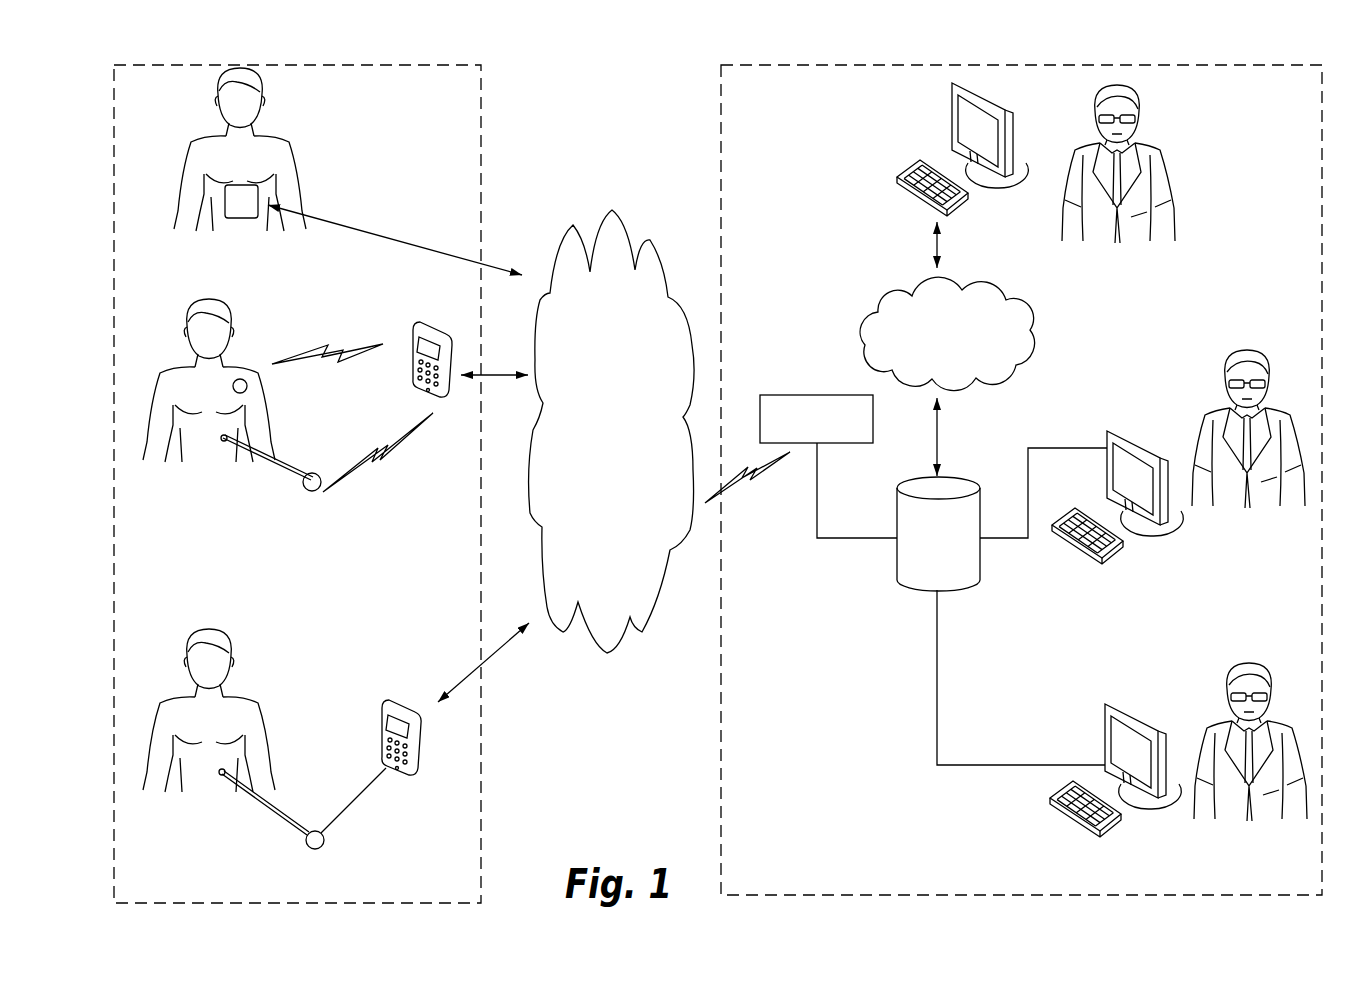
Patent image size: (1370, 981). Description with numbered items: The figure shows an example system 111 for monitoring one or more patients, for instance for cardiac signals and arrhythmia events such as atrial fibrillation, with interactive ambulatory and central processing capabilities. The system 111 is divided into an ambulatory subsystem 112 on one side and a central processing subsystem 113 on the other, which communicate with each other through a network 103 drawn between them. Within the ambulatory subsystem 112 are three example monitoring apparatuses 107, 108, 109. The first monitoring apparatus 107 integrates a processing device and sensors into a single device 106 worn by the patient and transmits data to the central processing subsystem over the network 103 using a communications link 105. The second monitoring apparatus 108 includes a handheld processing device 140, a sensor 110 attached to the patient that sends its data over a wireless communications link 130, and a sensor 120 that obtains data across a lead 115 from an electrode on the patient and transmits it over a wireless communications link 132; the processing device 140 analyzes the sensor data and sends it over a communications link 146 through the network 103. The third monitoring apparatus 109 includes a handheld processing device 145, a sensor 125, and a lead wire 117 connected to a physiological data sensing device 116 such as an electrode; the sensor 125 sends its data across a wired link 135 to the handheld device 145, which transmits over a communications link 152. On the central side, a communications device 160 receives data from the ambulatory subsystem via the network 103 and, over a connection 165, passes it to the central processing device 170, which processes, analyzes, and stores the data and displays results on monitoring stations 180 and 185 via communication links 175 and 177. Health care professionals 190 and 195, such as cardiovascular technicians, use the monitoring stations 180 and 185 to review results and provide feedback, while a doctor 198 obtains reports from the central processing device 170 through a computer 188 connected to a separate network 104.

The system 111 is at (496, 48).
The ambulatory subsystem 112 is at (490, 897).
The central processing subsystem 113 is at (1272, 897).
The network 103 is at (612, 431).
The network 104 is at (947, 333).
The communications link 105 is at (422, 248).
The single device 106 is at (241, 218).
The monitoring apparatus 107 is at (326, 155).
The monitoring apparatus 108 is at (393, 312).
The monitoring apparatus 109 is at (368, 650).
The sensor 110 is at (243, 379).
The lead 115 is at (290, 472).
The physiological data sensing device 116 is at (224, 778).
The lead wire 117 is at (273, 811).
The sensor 120 is at (312, 492).
The sensor 125 is at (315, 850).
The wireless communications link 130 is at (355, 360).
The wireless communications link 132 is at (385, 466).
The wired link 135 is at (357, 797).
The processing device 140 is at (446, 332).
The processing device 145 is at (382, 712).
The communications link 146 is at (490, 372).
The communications link 152 is at (482, 663).
The communications device 160 is at (816, 419).
The connection 165 is at (820, 540).
The central processing device 170 is at (938, 534).
The communication link 175 is at (993, 540).
The communication link 177 is at (936, 745).
The monitoring station 180 is at (1112, 432).
The monitoring station 185 is at (1112, 705).
The computer 188 is at (950, 108).
The health care professional 190 is at (1210, 522).
The health care professional 195 is at (1203, 838).
The health care professional 198 is at (1188, 162).